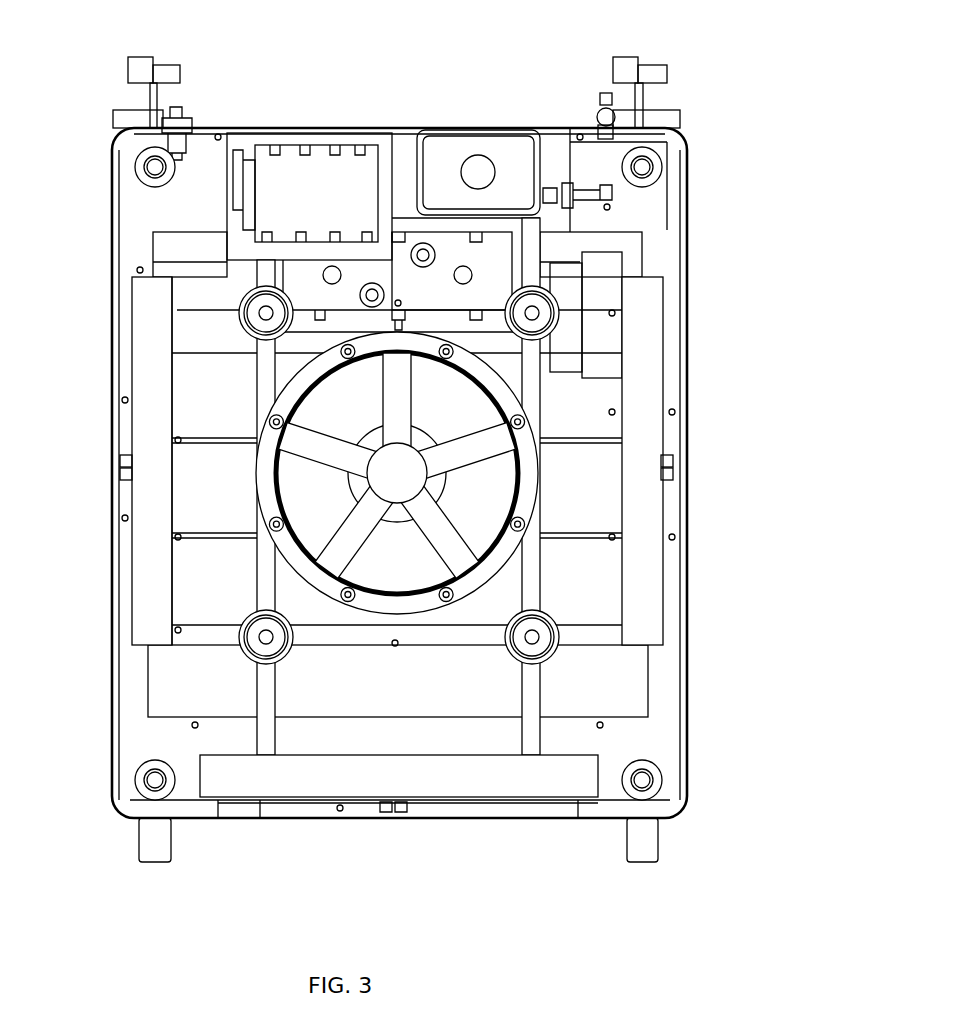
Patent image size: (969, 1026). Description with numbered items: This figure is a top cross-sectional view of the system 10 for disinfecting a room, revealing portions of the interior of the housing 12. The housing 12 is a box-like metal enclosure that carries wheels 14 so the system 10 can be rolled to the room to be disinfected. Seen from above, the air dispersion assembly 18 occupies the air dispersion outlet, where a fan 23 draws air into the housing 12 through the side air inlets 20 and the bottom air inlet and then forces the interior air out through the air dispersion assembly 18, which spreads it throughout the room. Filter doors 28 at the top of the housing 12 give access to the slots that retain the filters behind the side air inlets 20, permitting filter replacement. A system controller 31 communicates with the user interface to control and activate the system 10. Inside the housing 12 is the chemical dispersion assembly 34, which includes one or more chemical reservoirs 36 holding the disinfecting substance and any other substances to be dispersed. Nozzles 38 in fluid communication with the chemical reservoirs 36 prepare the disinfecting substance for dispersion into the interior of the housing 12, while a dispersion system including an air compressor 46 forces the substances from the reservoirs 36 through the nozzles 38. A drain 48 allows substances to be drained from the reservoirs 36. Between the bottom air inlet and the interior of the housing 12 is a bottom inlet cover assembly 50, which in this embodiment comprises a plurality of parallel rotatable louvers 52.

The system 10 is at (757, 108).
The housing 12 is at (680, 218).
The wheels 14 is at (156, 98).
The air dispersion assembly 18 is at (536, 510).
The side air inlets 20 is at (712, 410).
The fan 23 is at (600, 600).
The filter doors 28 is at (640, 340).
The system controller 31 is at (287, 175).
The chemical dispersion assembly 34 is at (455, 85).
The chemical reservoirs 36 is at (500, 143).
The nozzles 38 is at (535, 315).
The air compressor 46 is at (300, 275).
The drain 48 is at (603, 110).
The bottom inlet cover assembly 50 is at (190, 540).
The louvers 52 is at (590, 420).